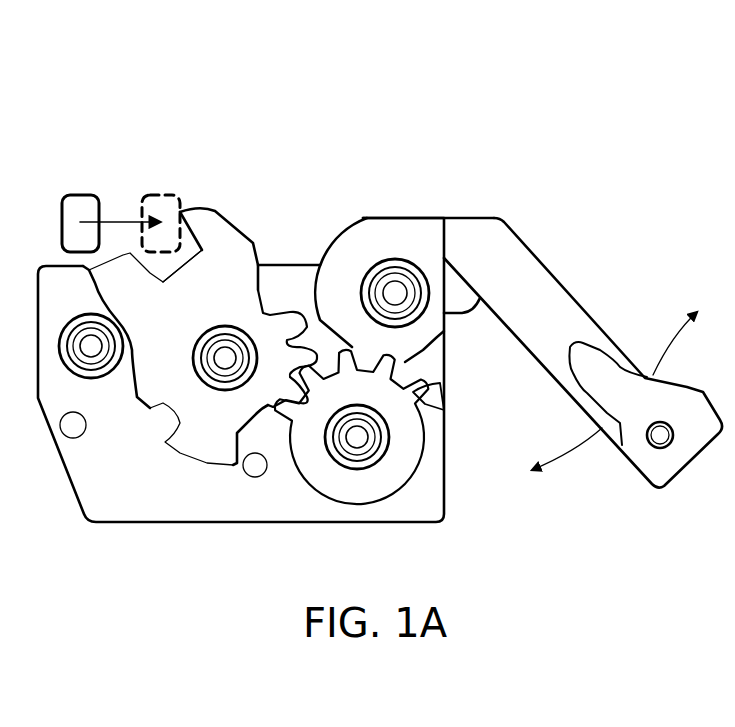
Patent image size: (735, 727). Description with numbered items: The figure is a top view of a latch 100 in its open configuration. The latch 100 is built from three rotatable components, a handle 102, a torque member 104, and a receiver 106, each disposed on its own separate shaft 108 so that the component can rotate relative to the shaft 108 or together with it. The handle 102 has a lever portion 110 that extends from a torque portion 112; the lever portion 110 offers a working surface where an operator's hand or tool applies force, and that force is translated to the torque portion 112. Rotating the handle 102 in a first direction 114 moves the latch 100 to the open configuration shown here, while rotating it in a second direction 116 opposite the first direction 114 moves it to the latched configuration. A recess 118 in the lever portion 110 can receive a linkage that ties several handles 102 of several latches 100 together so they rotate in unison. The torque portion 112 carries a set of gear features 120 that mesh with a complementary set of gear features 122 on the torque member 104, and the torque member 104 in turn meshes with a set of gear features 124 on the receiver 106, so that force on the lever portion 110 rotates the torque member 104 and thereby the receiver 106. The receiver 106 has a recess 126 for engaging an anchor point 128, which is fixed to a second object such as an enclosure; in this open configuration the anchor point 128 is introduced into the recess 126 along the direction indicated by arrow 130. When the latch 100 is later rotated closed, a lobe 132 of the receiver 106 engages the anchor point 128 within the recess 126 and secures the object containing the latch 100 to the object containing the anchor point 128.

The latch 100 is at (380, 100).
The handle 102 is at (482, 196).
The torque member 104 is at (372, 496).
The receiver 106 is at (214, 316).
The shaft 108 is at (195, 352).
The lever portion 110 is at (567, 282).
The torque portion 112 is at (433, 262).
The first direction 114 is at (668, 358).
The second direction 116 is at (557, 457).
The recess 118 is at (647, 422).
The set of gear features 120 is at (410, 358).
The set of gear features 122 is at (430, 385).
The set of gear features 124 is at (268, 405).
The recess 126 is at (203, 254).
The anchor point 128 is at (88, 192).
The arrow 130 is at (104, 220).
The lobe 132 is at (136, 294).